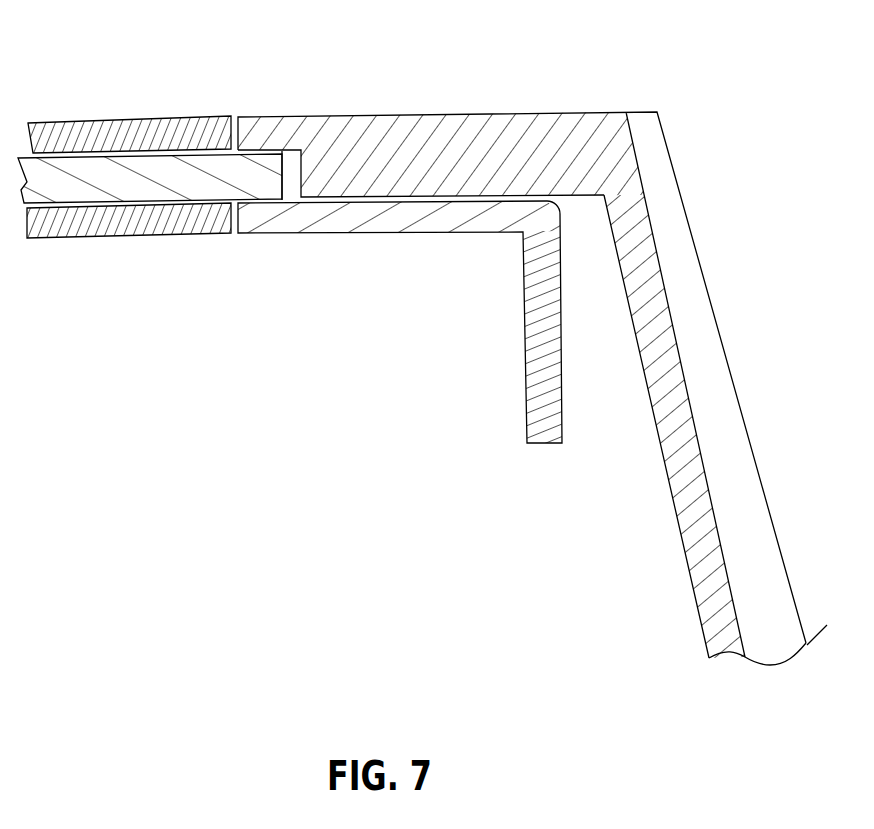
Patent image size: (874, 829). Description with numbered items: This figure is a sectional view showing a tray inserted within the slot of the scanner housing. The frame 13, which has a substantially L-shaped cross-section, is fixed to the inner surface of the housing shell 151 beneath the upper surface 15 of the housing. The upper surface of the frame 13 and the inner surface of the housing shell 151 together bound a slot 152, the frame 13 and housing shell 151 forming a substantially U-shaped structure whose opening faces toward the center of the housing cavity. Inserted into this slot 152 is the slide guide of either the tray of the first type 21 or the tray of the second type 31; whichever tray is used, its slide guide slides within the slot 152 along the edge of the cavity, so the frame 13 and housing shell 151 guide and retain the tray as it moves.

The frame 13 is at (386, 220).
The upper surface 15 is at (532, 342).
The housing shell 151 is at (487, 150).
The slot 152 is at (296, 190).
The tray of the first type 21 is at (254, 182).
The tray of the second type 31 is at (254, 182).